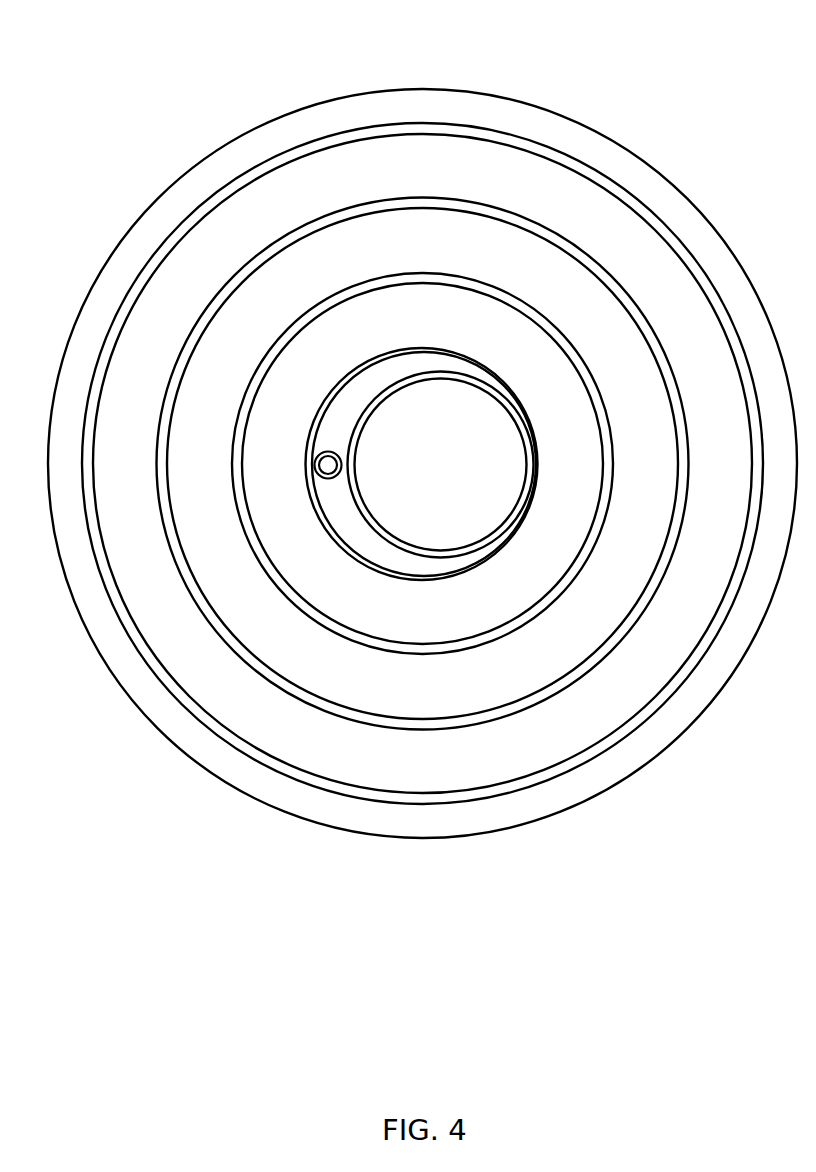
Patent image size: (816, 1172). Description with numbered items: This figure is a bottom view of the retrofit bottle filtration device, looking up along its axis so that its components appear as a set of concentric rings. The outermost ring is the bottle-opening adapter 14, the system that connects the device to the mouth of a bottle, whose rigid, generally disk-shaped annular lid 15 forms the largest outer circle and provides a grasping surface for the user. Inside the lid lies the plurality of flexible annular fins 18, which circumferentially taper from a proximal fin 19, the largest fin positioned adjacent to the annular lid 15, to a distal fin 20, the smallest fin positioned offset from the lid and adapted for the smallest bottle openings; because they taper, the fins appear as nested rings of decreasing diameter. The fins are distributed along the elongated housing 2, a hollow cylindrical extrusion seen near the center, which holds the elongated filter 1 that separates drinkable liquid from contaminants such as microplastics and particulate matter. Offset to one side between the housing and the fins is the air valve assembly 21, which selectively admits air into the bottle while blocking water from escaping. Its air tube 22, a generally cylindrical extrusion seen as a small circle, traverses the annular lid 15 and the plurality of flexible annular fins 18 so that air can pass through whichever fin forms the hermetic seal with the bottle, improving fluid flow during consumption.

The bottle-opening adapter 14 is at (127, 122).
The annular lid 15 is at (588, 142).
The plurality of flexible annular fins 18 is at (236, 772).
The proximal fin 19 is at (438, 183).
The distal fin 20 is at (438, 333).
The elongated housing 2 is at (537, 440).
The elongated filter 1 is at (494, 475).
The air valve assembly 21 is at (337, 486).
The air tube 22 is at (328, 465).